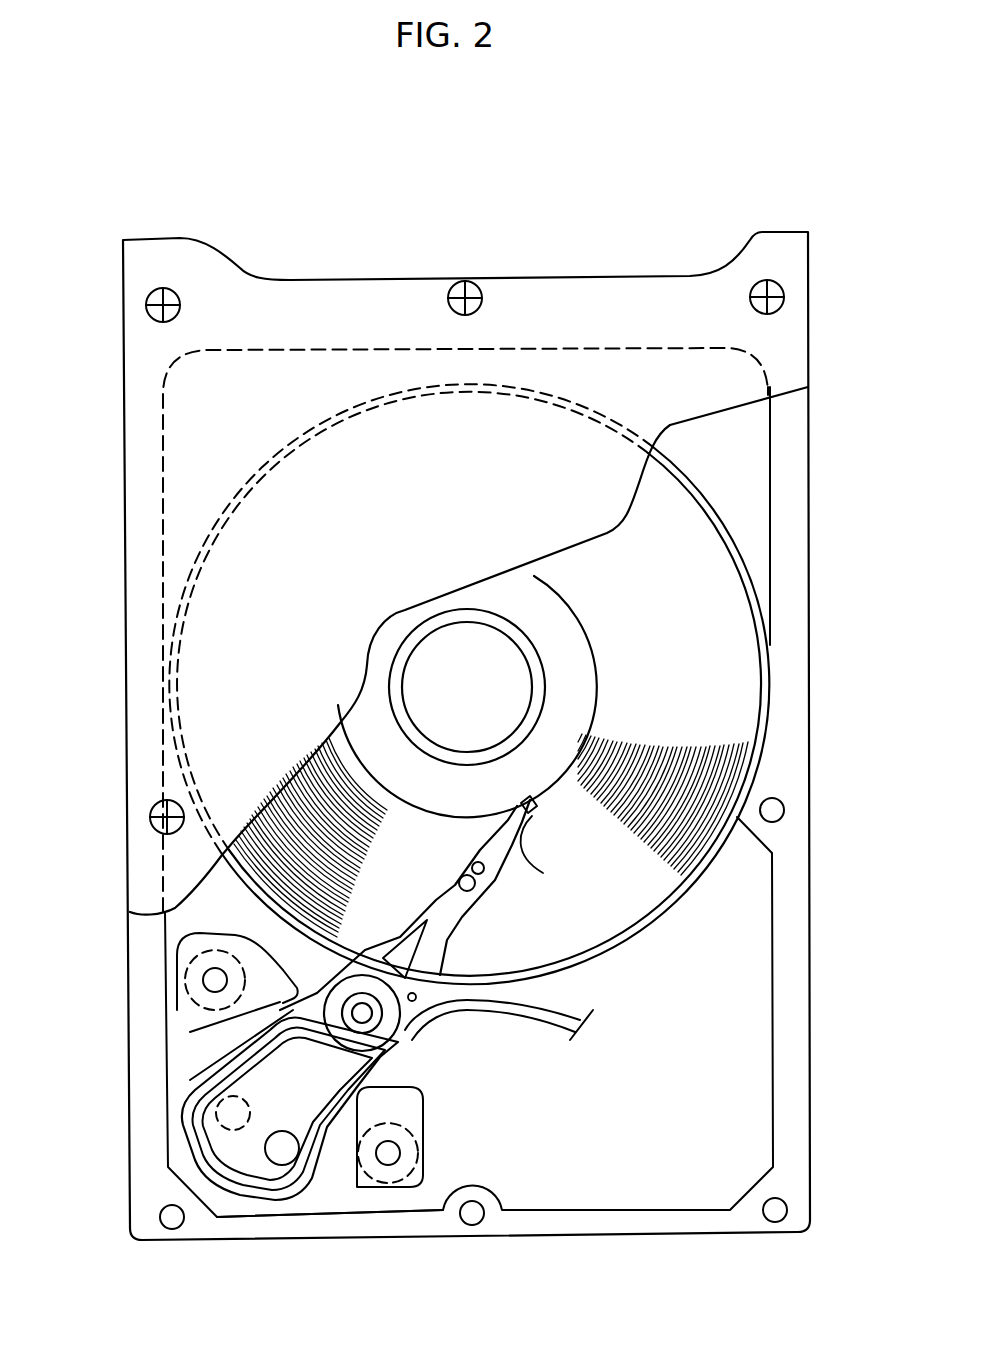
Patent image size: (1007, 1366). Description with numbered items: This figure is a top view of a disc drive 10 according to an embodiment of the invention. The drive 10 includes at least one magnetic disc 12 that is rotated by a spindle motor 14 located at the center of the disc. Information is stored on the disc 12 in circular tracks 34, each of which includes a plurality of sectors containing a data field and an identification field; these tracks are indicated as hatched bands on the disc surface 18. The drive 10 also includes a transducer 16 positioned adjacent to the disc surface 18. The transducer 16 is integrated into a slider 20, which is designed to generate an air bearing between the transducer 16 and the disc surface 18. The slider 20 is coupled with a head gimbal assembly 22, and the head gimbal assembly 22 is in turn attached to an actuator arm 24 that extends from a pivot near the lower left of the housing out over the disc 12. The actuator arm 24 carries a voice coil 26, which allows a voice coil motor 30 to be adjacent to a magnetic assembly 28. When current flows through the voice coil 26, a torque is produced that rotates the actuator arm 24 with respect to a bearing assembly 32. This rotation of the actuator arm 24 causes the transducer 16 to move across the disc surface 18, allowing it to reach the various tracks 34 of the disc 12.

The drive 10 is at (638, 214).
The magnetic disc 12 is at (722, 617).
The spindle motor 14 is at (440, 662).
The transducer 16 is at (540, 810).
The disc surface 18 is at (688, 678).
The slider 20 is at (548, 853).
The head gimbal assembly 22 is at (553, 827).
The actuator arm 24 is at (476, 916).
The voice coil 26 is at (213, 1105).
The magnetic assembly 28 is at (215, 1048).
The voice coil motor 30 is at (323, 1182).
The bearing assembly 32 is at (372, 1024).
The circular track 34 is at (330, 808).